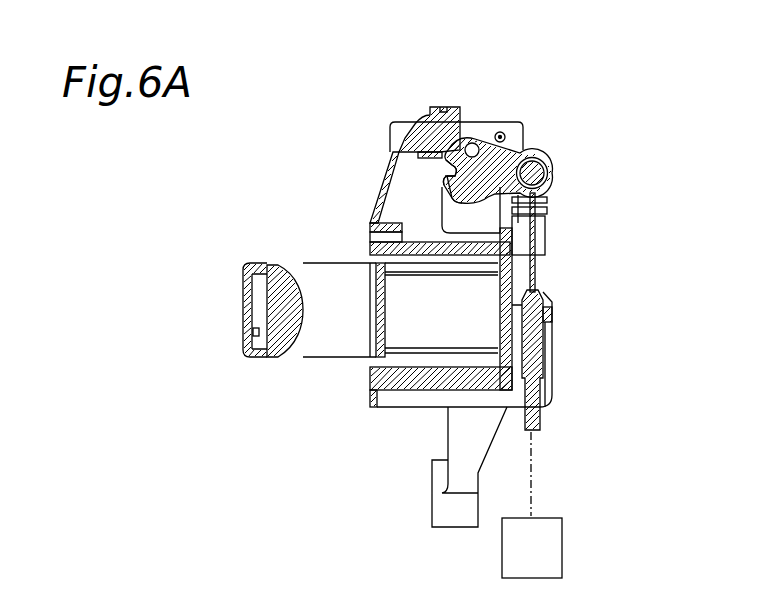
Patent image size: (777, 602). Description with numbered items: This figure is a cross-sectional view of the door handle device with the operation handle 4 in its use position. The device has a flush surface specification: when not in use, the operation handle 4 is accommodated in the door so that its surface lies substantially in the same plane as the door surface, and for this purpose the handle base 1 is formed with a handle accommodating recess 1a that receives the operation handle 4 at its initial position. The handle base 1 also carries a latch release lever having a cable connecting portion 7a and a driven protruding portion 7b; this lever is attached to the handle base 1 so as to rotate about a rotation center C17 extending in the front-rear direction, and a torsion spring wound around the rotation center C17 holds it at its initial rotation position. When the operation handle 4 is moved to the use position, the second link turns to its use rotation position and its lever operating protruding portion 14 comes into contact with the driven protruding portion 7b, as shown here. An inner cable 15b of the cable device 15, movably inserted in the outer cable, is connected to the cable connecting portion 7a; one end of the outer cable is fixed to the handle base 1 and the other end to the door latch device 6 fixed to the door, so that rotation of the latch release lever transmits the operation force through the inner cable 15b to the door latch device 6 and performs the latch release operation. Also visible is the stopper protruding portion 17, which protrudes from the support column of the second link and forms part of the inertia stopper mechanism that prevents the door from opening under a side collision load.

The handle base 1 is at (387, 383).
The handle accommodating recess 1a is at (403, 365).
The operation handle 4 is at (247, 330).
The door latch device 6 is at (552, 550).
The cable connecting portion 7a is at (552, 187).
The driven protruding portion 7b is at (478, 202).
The lever operating protruding portion 14 is at (440, 187).
The cable device 15 is at (538, 363).
The inner cable 15b is at (540, 270).
The stopper protruding portion 17 is at (523, 150).
The rotation center C17 is at (483, 135).